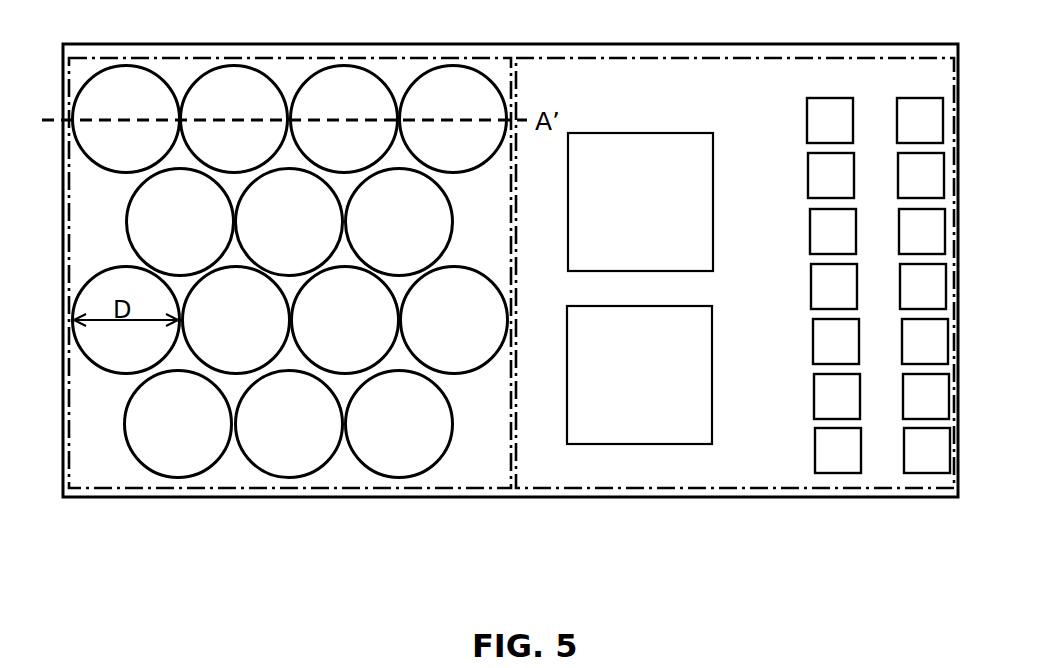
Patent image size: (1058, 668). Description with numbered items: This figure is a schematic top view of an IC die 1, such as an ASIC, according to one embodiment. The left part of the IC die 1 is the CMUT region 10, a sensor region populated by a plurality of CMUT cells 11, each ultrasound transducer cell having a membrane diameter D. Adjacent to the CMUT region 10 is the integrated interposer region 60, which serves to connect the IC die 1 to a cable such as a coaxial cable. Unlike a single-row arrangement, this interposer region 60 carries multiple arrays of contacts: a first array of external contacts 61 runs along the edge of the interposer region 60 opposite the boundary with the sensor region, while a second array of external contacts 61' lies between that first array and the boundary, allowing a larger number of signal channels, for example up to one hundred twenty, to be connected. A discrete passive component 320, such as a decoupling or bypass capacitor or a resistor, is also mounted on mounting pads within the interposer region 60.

The IC die 1 is at (100, 498).
The CMUT region 10 is at (488, 473).
The CMUT cells 11 is at (277, 437).
The interposer region 60 is at (735, 330).
The external contacts 61 is at (922, 336).
The external contacts 61' is at (833, 336).
The discrete passive component 320 is at (652, 215).